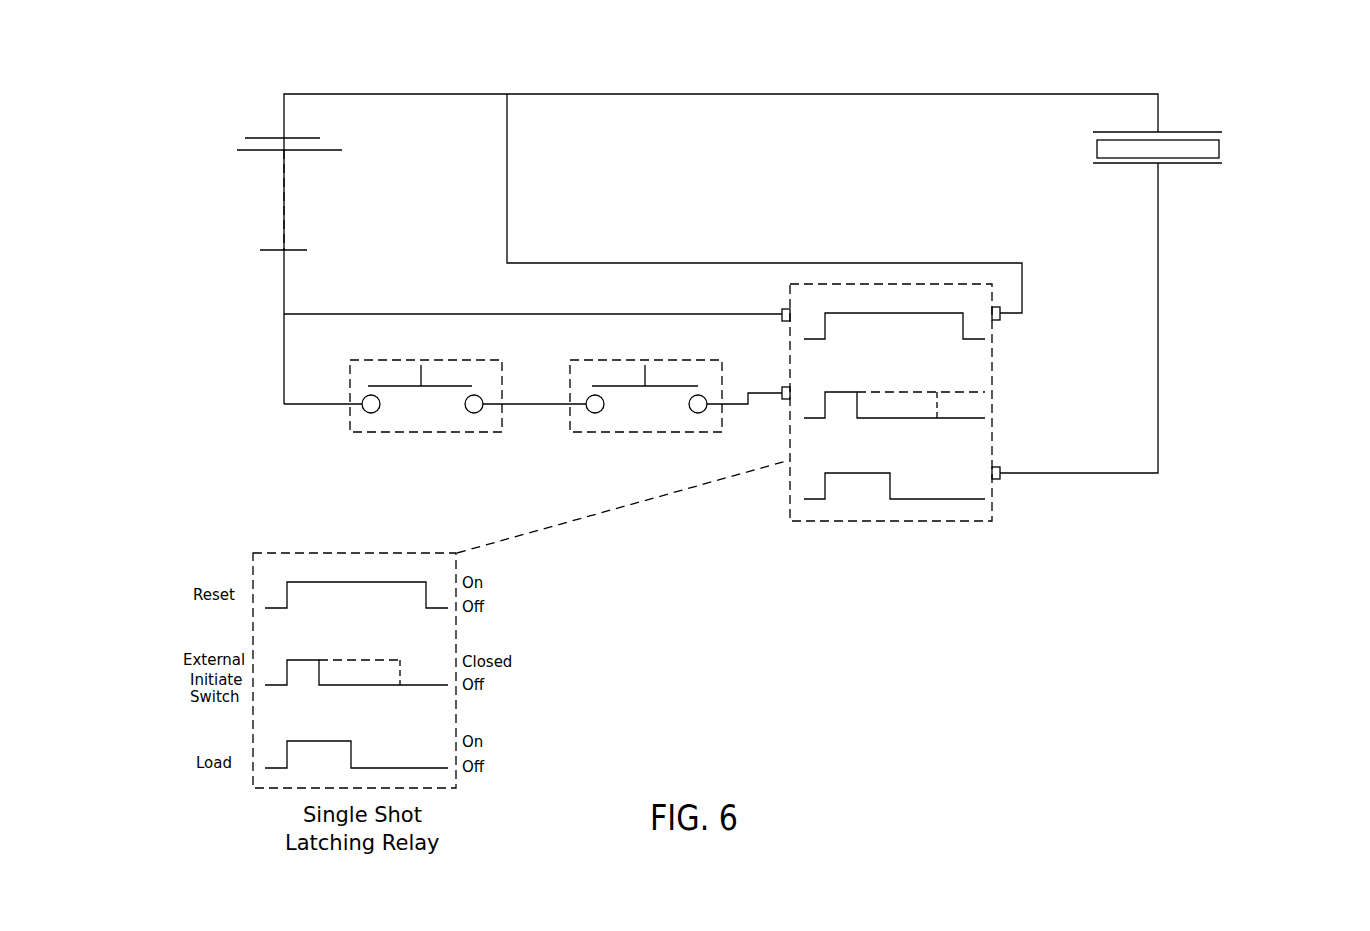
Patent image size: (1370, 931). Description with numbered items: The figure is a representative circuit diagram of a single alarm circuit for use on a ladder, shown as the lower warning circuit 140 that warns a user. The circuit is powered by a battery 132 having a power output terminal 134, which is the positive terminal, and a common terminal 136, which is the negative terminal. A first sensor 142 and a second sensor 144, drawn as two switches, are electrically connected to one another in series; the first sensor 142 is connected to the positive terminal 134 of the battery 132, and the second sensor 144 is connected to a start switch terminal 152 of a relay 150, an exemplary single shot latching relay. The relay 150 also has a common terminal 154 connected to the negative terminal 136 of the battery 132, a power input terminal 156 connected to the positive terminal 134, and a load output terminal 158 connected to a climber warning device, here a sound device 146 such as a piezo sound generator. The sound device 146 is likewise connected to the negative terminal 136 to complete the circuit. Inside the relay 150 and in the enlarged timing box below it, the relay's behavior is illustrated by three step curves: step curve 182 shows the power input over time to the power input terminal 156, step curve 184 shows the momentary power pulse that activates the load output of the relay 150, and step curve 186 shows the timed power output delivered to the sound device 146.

The lower warning circuit 140 is at (343, 80).
The battery 132 is at (282, 182).
The power output terminal 134 is at (282, 252).
The common terminal 136 is at (268, 133).
The first sensor 142 is at (350, 428).
The second sensor 144 is at (570, 428).
The sound device 146 is at (1200, 130).
The relay 150 is at (993, 523).
The start switch terminal 152 is at (783, 390).
The common terminal 154 is at (1000, 322).
The power input terminal 156 is at (783, 307).
The load output terminal 158 is at (1000, 468).
The step curve 182 is at (400, 582).
The step curve 184 is at (307, 660).
The step curve 186 is at (318, 741).